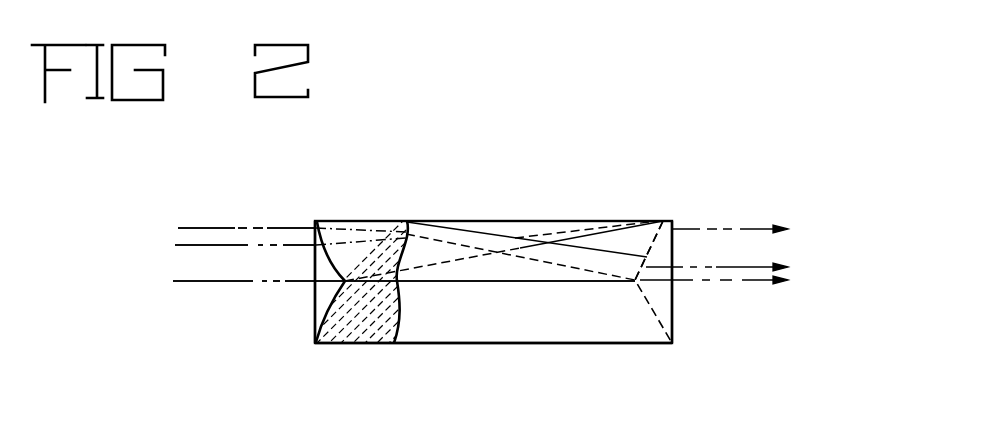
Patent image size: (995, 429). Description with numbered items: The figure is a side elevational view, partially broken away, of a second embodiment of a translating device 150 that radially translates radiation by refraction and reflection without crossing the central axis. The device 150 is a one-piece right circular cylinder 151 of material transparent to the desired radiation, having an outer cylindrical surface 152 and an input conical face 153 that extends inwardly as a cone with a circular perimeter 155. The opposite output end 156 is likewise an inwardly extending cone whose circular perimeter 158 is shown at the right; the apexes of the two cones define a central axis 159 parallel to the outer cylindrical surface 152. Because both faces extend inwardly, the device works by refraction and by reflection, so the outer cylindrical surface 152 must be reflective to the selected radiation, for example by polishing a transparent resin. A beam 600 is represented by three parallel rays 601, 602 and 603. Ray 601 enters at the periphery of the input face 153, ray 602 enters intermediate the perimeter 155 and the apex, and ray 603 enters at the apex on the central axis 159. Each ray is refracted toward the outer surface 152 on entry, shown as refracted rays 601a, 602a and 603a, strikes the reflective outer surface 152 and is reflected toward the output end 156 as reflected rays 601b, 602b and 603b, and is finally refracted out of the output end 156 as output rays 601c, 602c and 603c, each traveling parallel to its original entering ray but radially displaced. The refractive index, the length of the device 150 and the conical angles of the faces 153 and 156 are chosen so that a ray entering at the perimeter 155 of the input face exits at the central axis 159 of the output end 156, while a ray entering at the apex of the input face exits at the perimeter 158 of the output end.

The translating device 150 is at (536, 201).
The right circular cylinder 151 is at (446, 348).
The outer cylindrical surface 152 is at (538, 345).
The input conical face 153 is at (284, 292).
The perimeter 155 is at (313, 345).
The output end 156 is at (675, 315).
The perimeter 158 is at (678, 345).
The central axis 159 is at (420, 283).
The beam 600 is at (237, 224).
The ray 601 is at (190, 227).
The ray 602 is at (193, 245).
The ray 603 is at (192, 278).
The refracted ray 601a is at (325, 220).
The refracted ray 602a is at (413, 222).
The reflected ray 601b is at (546, 272).
The reflected ray 602b is at (493, 232).
The refracted ray 603a is at (438, 263).
The reflected ray 603b is at (667, 220).
The output ray 601c is at (757, 283).
The output ray 602c is at (747, 267).
The output ray 603c is at (745, 228).